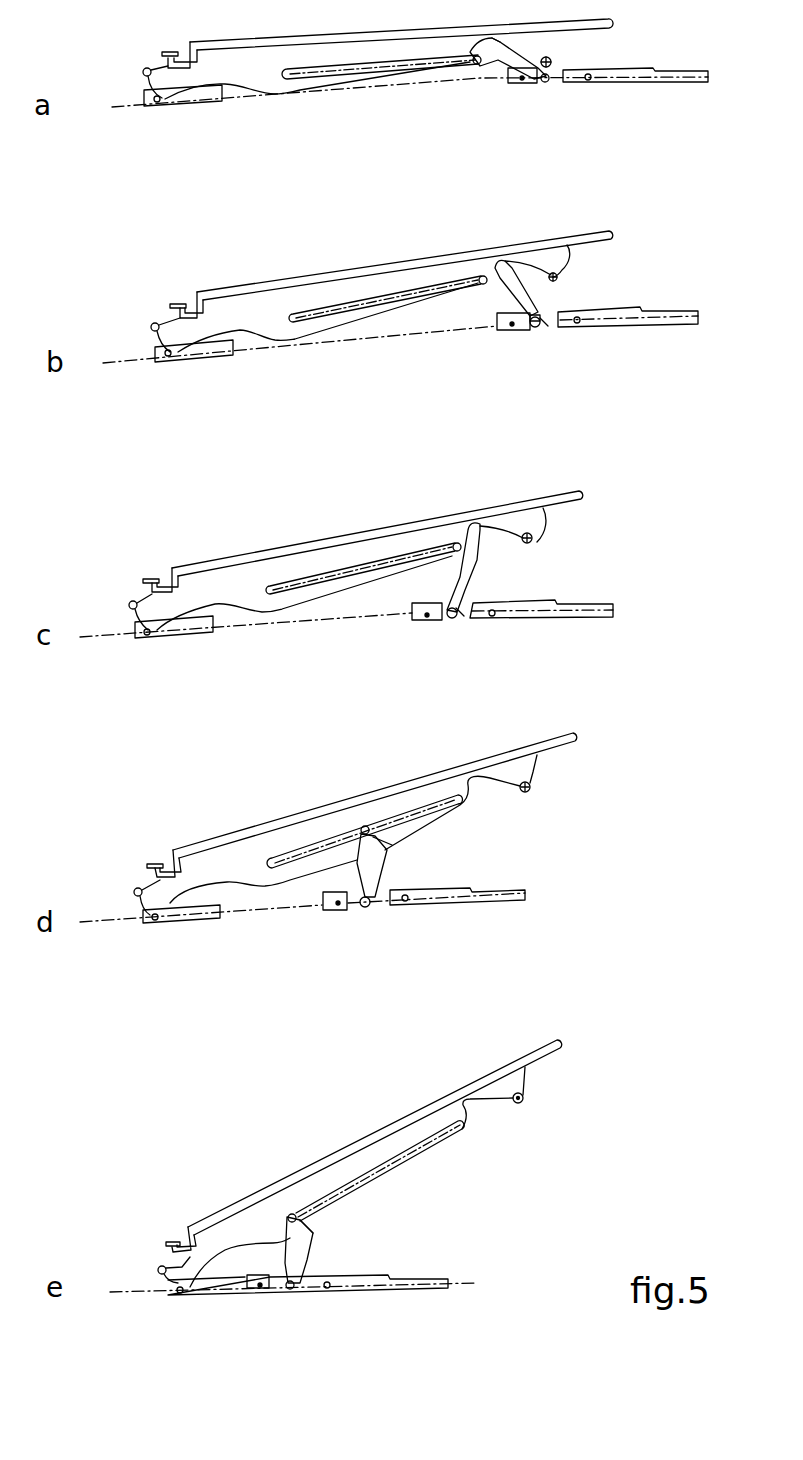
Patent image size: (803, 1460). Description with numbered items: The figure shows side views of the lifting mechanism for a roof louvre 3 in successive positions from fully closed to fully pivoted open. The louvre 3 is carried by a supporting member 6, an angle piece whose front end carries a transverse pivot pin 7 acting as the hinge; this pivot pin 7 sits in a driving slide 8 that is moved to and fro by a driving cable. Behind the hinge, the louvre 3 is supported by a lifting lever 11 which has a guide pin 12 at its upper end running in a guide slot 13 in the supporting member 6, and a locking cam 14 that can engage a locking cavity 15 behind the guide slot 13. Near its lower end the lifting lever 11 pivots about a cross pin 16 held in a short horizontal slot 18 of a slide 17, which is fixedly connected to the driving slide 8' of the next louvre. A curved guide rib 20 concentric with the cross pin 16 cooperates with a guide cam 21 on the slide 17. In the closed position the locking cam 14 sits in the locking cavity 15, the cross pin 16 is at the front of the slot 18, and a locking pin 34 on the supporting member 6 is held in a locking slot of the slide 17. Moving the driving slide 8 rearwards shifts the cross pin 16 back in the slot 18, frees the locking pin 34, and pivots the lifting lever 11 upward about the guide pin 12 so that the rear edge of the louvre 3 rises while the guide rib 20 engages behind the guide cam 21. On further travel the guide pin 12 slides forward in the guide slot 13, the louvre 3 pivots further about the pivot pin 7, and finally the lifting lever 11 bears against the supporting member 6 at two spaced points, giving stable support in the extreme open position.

The louvre 3 is at (281, 42).
The supporting member 6 is at (250, 74).
The pivot pin 7 is at (157, 103).
The driving slide 8 is at (291, 690).
The driving slide of the next louvre 8' is at (549, 486).
The lifting lever 11 is at (507, 62).
The guide pin 12 is at (473, 67).
The guide slot 13 is at (348, 76).
The locking cam 14 is at (476, 58).
The locking cavity 15 is at (511, 63).
The cross pin 16 is at (545, 83).
The slide 17 is at (583, 80).
The horizontal slot 18 is at (552, 84).
The guide rib 20 is at (538, 313).
The guide cam 21 is at (547, 327).
The locking pin 34 is at (553, 275).